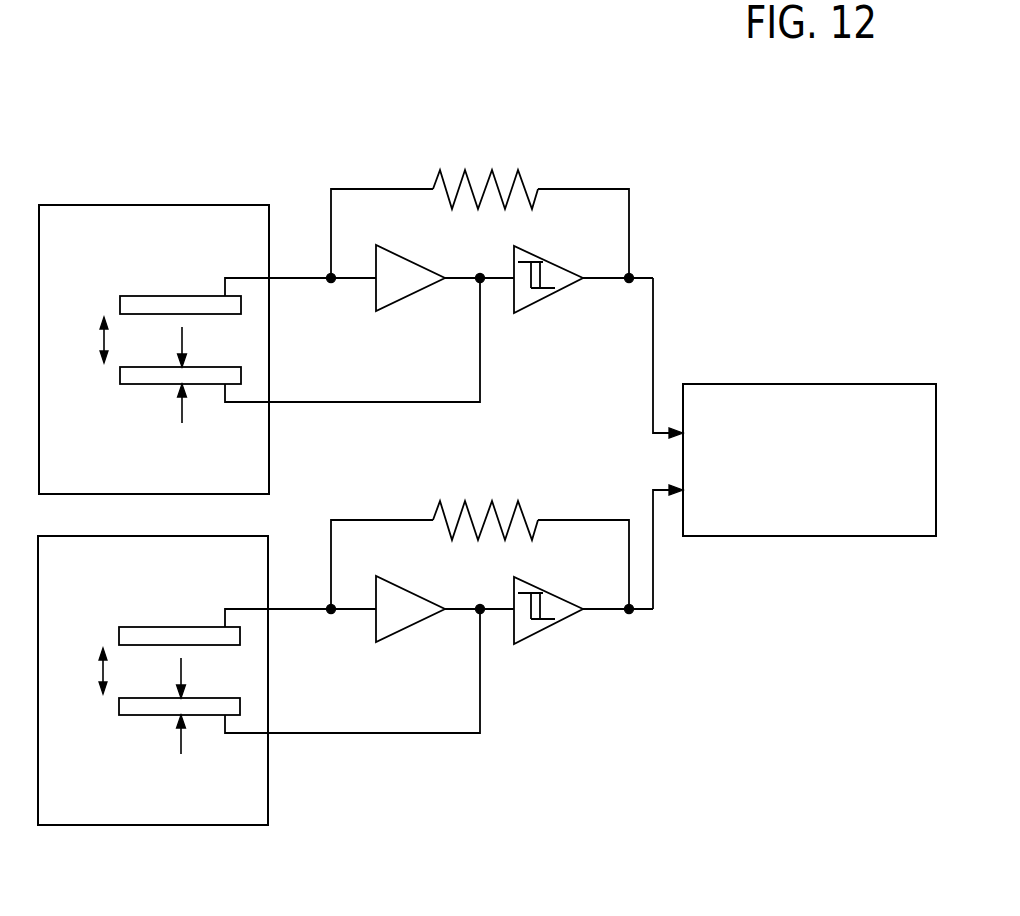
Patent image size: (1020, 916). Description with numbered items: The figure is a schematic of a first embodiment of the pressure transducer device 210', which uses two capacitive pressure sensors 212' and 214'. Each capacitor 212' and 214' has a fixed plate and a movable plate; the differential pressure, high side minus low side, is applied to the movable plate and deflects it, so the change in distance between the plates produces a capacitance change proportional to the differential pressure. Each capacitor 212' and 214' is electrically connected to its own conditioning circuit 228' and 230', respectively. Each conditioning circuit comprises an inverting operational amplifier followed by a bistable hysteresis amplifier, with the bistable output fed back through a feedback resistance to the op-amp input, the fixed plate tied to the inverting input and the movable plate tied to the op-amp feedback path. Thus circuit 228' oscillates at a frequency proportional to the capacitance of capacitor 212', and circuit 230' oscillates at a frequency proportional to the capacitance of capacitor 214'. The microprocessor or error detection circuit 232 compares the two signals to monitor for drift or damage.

The pressure transducer device 210' is at (487, 514).
The capacitive pressure sensor 212' is at (208, 312).
The capacitive pressure sensor 214' is at (199, 726).
The conditioning circuit 228' is at (481, 275).
The conditioning circuit 230' is at (454, 620).
The microprocessor or error detection circuit 232 is at (766, 384).